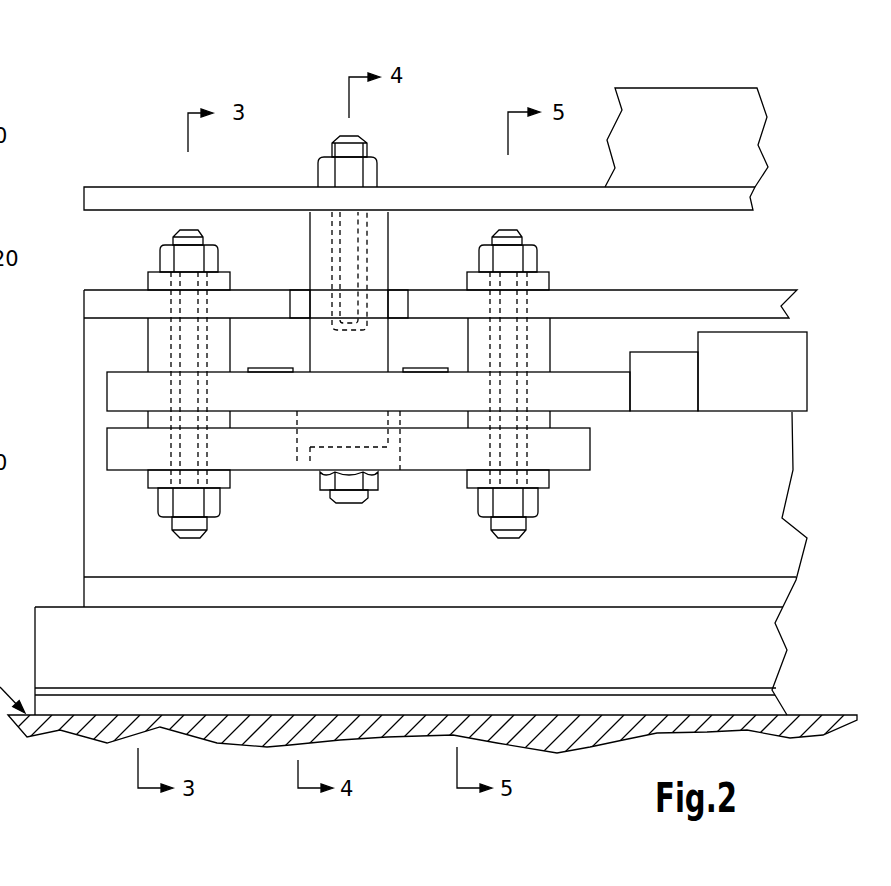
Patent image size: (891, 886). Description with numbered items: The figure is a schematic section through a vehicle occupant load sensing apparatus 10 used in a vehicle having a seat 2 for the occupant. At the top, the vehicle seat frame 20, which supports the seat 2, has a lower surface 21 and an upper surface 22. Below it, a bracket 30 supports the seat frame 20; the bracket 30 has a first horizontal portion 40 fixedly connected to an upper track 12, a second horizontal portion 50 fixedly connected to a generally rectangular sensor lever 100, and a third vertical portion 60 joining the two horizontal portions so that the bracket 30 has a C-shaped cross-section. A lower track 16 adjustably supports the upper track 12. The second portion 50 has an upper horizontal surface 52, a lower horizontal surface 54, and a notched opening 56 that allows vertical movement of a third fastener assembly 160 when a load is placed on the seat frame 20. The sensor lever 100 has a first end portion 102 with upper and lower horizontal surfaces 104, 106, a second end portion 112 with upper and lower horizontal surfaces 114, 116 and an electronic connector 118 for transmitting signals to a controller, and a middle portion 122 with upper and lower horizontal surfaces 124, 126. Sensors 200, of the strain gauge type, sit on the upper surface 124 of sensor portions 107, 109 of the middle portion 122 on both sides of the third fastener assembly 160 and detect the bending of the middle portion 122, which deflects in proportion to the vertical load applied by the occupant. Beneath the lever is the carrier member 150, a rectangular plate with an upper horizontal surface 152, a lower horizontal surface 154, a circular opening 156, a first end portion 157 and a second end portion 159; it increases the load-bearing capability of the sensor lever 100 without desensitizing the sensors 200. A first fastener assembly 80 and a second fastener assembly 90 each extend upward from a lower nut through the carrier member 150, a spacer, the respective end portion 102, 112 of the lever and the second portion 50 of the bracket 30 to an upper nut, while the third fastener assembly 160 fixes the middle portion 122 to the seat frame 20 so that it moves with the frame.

The seat 2 is at (757, 102).
The vehicle occupant load sensing apparatus 10 is at (722, 72).
The upper track 12 is at (748, 633).
The lower track 16 is at (733, 705).
The vehicle seat frame 20 is at (153, 183).
The lower surface of the vehicle seat frame 21 is at (263, 212).
The upper surface of the vehicle seat frame 22 is at (227, 185).
The bracket 30 is at (770, 288).
The first horizontal portion 40 is at (763, 590).
The second horizontal portion 50 is at (777, 305).
The upper horizontal surface 52 is at (655, 288).
The lower horizontal surface 54 is at (632, 322).
The notched opening 56 is at (395, 300).
The third vertical portion 60 is at (763, 473).
The first fastener assembly 80 is at (142, 258).
The second fastener assembly 90 is at (558, 255).
The sensor lever 100 is at (617, 413).
The first end portion 102 is at (125, 387).
The upper horizontal surface 104 is at (122, 370).
The lower horizontal surface 106 is at (113, 415).
The sensor portion 107 is at (288, 400).
The sensor portion 109 is at (408, 388).
The second end portion 112 is at (558, 390).
The upper horizontal surface 114 is at (632, 365).
The lower horizontal surface 116 is at (593, 417).
The electronic connector 118 is at (785, 380).
The middle portion 122 is at (343, 385).
The upper horizontal surface 124 is at (395, 368).
The lower horizontal surface 126 is at (423, 415).
The carrier member 150 is at (582, 472).
The upper horizontal surface 152 is at (125, 425).
The lower horizontal surface 154 is at (448, 470).
The circular opening 156 is at (303, 462).
The first end portion 157 is at (122, 443).
The second end portion 159 is at (562, 450).
The third fastener assembly 160 is at (385, 143).
The sensors 200 is at (265, 372).